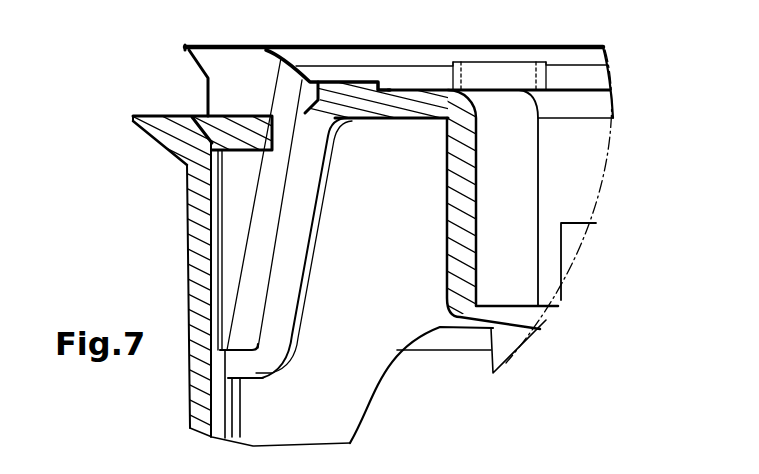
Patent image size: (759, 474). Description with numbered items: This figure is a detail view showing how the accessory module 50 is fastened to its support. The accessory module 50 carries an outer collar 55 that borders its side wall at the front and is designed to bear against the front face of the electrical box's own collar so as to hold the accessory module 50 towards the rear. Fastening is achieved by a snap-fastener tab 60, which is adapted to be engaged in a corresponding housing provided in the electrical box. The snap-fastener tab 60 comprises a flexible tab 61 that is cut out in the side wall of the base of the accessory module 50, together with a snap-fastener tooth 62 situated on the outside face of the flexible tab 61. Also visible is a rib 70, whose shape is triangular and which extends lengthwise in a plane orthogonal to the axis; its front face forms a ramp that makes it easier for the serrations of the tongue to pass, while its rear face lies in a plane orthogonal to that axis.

The accessory module 50 is at (149, 106).
The outer collar 55 is at (197, 66).
The snap-fastener tab 60 is at (161, 262).
The flexible tab 61 is at (185, 248).
The snap-fastener tooth 62 is at (176, 160).
The rib 70 is at (311, 138).